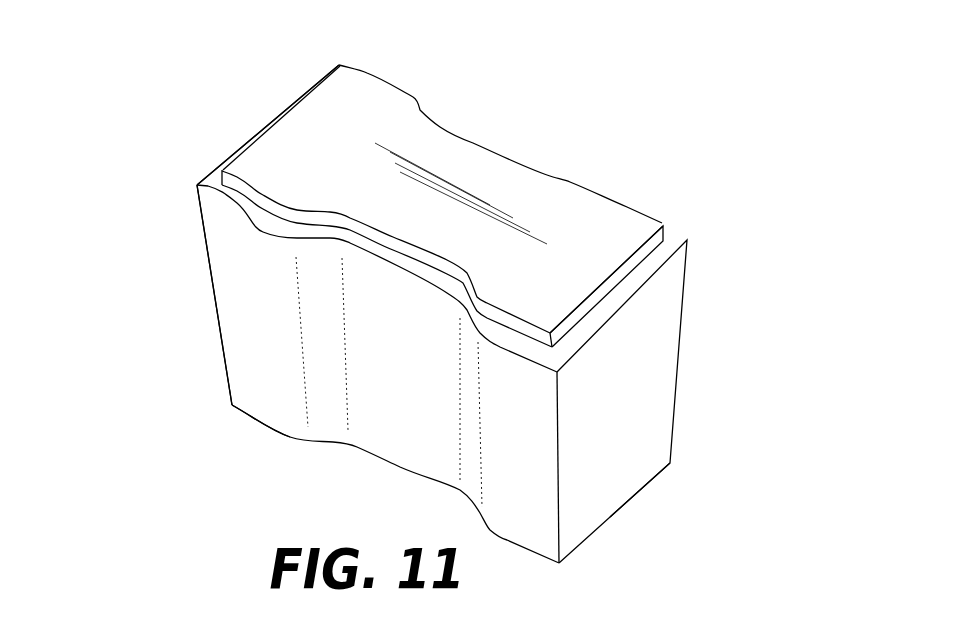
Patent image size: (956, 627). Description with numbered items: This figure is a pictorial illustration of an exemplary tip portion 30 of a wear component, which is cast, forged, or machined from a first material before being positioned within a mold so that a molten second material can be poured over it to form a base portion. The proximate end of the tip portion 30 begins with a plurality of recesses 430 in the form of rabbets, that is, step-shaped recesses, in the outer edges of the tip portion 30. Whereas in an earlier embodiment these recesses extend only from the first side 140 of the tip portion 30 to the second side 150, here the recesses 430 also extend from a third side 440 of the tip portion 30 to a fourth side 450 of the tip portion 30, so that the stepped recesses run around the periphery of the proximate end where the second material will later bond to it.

The tip portion 30 is at (652, 392).
The first side 140 is at (268, 396).
The second side 150 is at (568, 150).
The recesses 430 is at (230, 134).
The third side 440 is at (195, 302).
The fourth side 450 is at (645, 462).